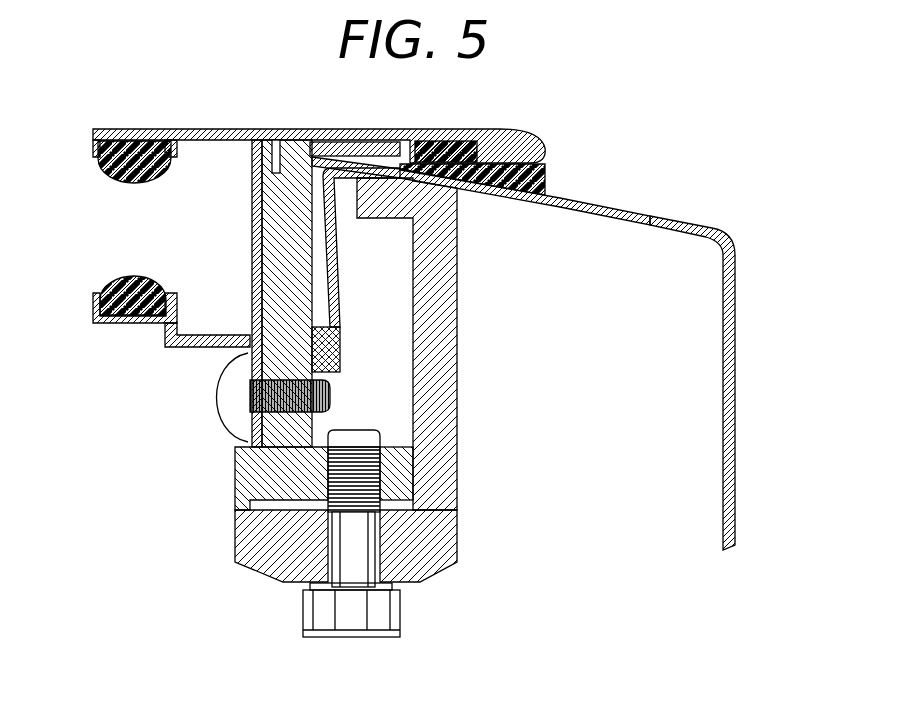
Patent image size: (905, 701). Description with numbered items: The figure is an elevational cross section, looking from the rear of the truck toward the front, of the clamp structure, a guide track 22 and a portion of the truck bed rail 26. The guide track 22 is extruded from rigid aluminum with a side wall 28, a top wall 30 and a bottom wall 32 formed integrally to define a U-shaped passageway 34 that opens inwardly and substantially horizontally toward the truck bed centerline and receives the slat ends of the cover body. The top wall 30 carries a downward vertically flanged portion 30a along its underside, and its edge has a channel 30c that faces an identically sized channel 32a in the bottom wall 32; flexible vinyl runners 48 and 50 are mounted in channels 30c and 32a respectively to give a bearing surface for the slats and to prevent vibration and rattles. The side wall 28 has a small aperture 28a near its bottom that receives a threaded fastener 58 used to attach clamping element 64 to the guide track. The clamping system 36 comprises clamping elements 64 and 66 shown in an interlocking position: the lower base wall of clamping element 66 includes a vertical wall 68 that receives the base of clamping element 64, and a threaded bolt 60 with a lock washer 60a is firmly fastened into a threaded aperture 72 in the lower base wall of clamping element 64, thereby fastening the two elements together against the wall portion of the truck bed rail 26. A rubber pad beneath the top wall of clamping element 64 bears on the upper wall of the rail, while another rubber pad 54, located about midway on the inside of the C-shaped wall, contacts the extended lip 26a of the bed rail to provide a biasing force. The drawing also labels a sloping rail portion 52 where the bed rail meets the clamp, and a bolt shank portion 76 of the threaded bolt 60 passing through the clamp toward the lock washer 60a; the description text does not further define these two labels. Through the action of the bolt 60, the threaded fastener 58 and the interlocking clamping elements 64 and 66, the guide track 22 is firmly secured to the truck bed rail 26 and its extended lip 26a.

The guide track 22 is at (156, 124).
The top wall 30 is at (268, 136).
The vertically flanged portion 30a is at (281, 136).
The channel 30c is at (108, 172).
The vinyl runner 48 is at (150, 174).
The U-shaped passageway 34 is at (214, 220).
The vinyl runner 50 is at (133, 284).
The channel 32a is at (102, 302).
The side wall 28 is at (262, 296).
The extended lip of the truck bed rail 26a is at (335, 262).
The clamping element 66 is at (458, 302).
The sheet portion 52 is at (548, 182).
The truck bed rail 26 is at (703, 228).
The bottom wall 32 is at (197, 348).
The rubber pad 54 is at (343, 366).
The threaded fastener 58 is at (223, 402).
The clamping element 64 is at (323, 432).
The threaded aperture 72 is at (452, 418).
The aperture 28a is at (245, 410).
The vertical wall 68 is at (235, 472).
The clamping system 36 is at (556, 459).
The lock washer 60a is at (308, 592).
The threaded bolt 60 is at (352, 612).
The bolt shank 76 is at (378, 538).